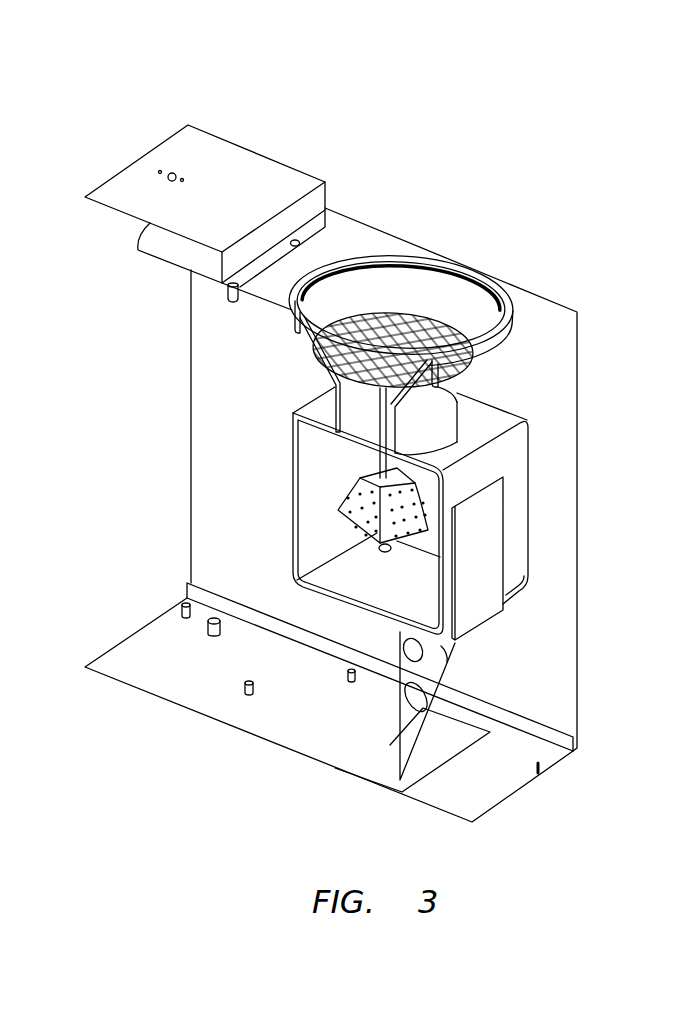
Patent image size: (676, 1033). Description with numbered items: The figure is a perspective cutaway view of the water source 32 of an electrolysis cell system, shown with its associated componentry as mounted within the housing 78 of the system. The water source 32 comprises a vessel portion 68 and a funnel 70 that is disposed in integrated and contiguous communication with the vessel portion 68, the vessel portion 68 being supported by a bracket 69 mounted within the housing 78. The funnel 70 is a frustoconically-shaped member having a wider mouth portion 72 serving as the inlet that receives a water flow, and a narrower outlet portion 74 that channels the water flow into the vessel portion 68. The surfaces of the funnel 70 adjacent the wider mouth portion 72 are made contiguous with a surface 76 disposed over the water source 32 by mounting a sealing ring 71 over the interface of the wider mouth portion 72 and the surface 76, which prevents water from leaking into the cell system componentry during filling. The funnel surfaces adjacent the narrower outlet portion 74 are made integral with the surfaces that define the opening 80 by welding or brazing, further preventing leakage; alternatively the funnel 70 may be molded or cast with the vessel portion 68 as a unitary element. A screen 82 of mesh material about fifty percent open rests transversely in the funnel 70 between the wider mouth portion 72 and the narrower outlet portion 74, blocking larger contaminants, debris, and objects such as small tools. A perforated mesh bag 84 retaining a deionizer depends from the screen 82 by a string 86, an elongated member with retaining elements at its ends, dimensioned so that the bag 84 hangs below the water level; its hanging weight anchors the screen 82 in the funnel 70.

The water source 32 is at (557, 118).
The housing 78 is at (287, 163).
The surface 76 is at (342, 252).
The funnel 70 is at (447, 293).
The wider mouth portion 72 is at (480, 313).
The sealing ring 71 is at (504, 321).
The screen 82 is at (333, 342).
The narrower outlet portion 74 is at (352, 396).
The opening 80 is at (363, 422).
The string 86 is at (375, 446).
The mesh bag 84 is at (338, 510).
The vessel portion 68 is at (537, 547).
The bracket 69 is at (400, 690).